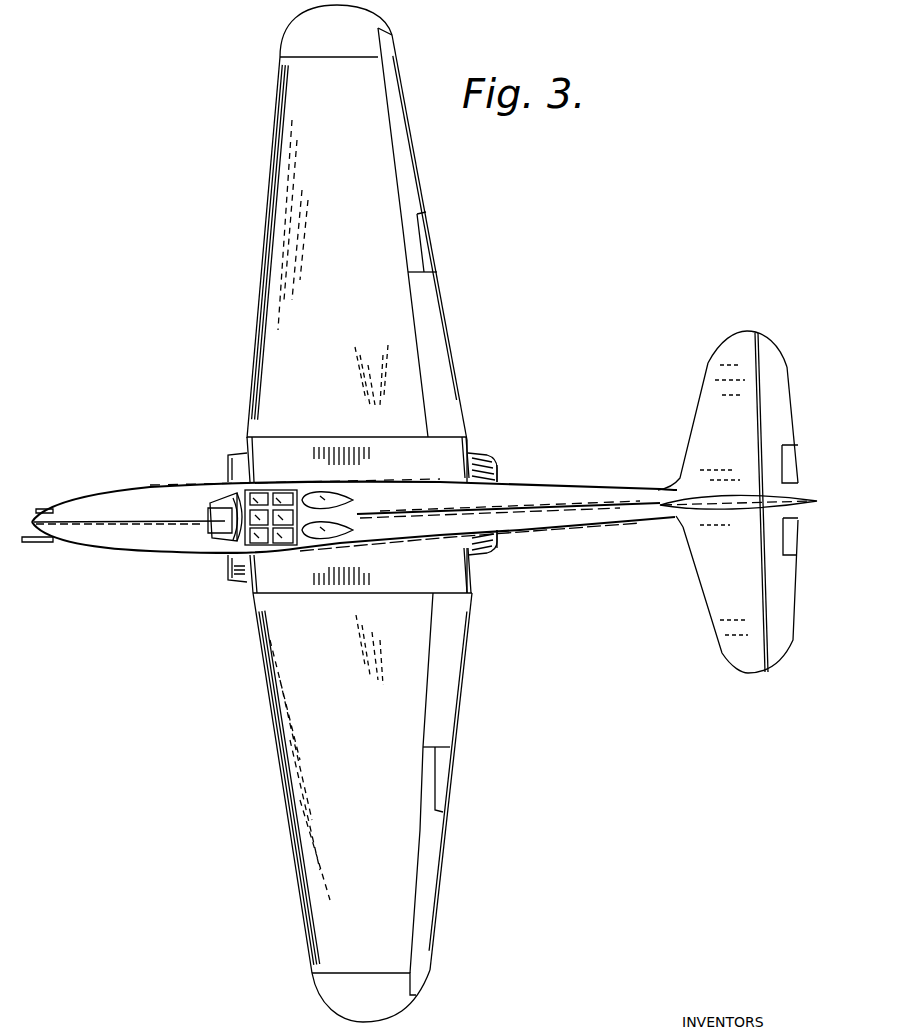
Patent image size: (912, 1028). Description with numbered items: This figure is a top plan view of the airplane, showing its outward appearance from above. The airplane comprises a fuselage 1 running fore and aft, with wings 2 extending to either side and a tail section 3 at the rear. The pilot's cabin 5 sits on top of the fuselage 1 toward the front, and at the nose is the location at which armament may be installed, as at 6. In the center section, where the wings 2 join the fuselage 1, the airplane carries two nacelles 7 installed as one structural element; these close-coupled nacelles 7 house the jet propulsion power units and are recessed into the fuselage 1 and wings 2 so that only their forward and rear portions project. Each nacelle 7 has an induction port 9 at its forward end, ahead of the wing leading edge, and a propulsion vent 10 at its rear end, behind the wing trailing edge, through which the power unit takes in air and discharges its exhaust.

The fuselage 1 is at (354, 516).
The wings 2 is at (359, 513).
The tail section 3 is at (737, 502).
The pilot's cabin 5 is at (257, 500).
The armament 6 is at (33, 544).
The nacelles 7 is at (473, 453).
The induction port 9 is at (228, 468).
The propulsion vent 10 is at (497, 472).